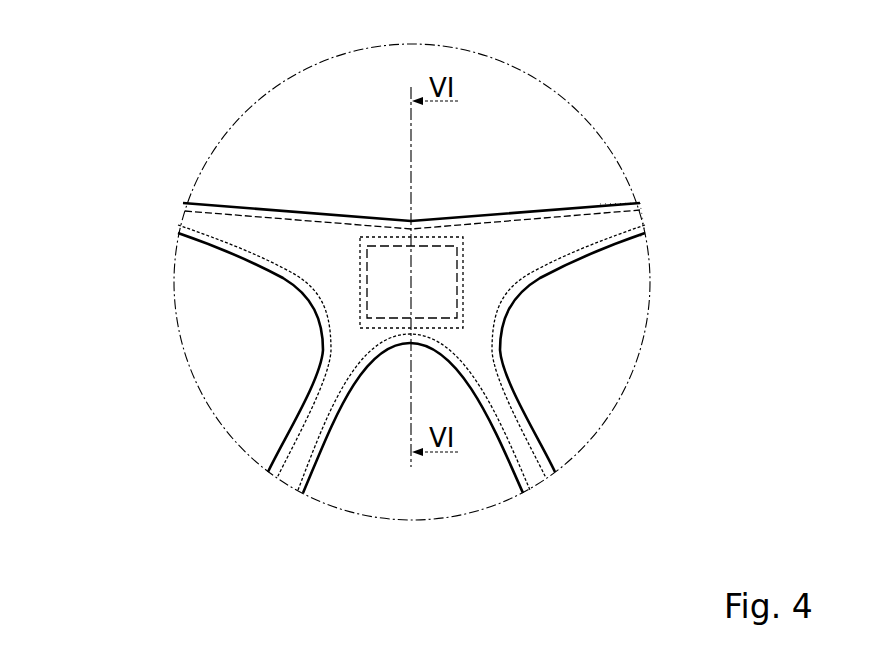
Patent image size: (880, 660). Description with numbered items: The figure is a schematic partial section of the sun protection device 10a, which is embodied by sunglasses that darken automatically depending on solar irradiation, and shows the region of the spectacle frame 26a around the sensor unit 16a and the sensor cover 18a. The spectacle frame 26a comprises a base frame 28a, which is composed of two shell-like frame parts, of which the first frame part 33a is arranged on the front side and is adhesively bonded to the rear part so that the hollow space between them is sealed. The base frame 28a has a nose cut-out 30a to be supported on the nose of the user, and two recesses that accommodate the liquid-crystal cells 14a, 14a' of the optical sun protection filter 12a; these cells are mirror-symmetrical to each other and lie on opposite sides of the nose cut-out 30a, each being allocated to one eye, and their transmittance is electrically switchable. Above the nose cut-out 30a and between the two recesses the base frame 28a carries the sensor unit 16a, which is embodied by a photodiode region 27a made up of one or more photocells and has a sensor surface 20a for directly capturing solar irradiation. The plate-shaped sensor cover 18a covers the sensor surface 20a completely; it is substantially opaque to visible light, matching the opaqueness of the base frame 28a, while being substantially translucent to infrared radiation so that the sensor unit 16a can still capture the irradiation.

The sun protection device 10a is at (592, 74).
The optical sun protection filter 12a is at (137, 297).
The liquid-crystal cell 14a is at (205, 352).
The liquid-crystal cell 14a' is at (624, 352).
The sensor unit 16a is at (380, 225).
The sensor cover 18a is at (388, 335).
The sensor surface 20a is at (440, 268).
The spectacle frame 26a is at (659, 203).
The photodiode region 27a is at (418, 243).
The base frame 28a is at (506, 430).
The nose cut-out 30a is at (395, 494).
The frame part 33a is at (233, 228).